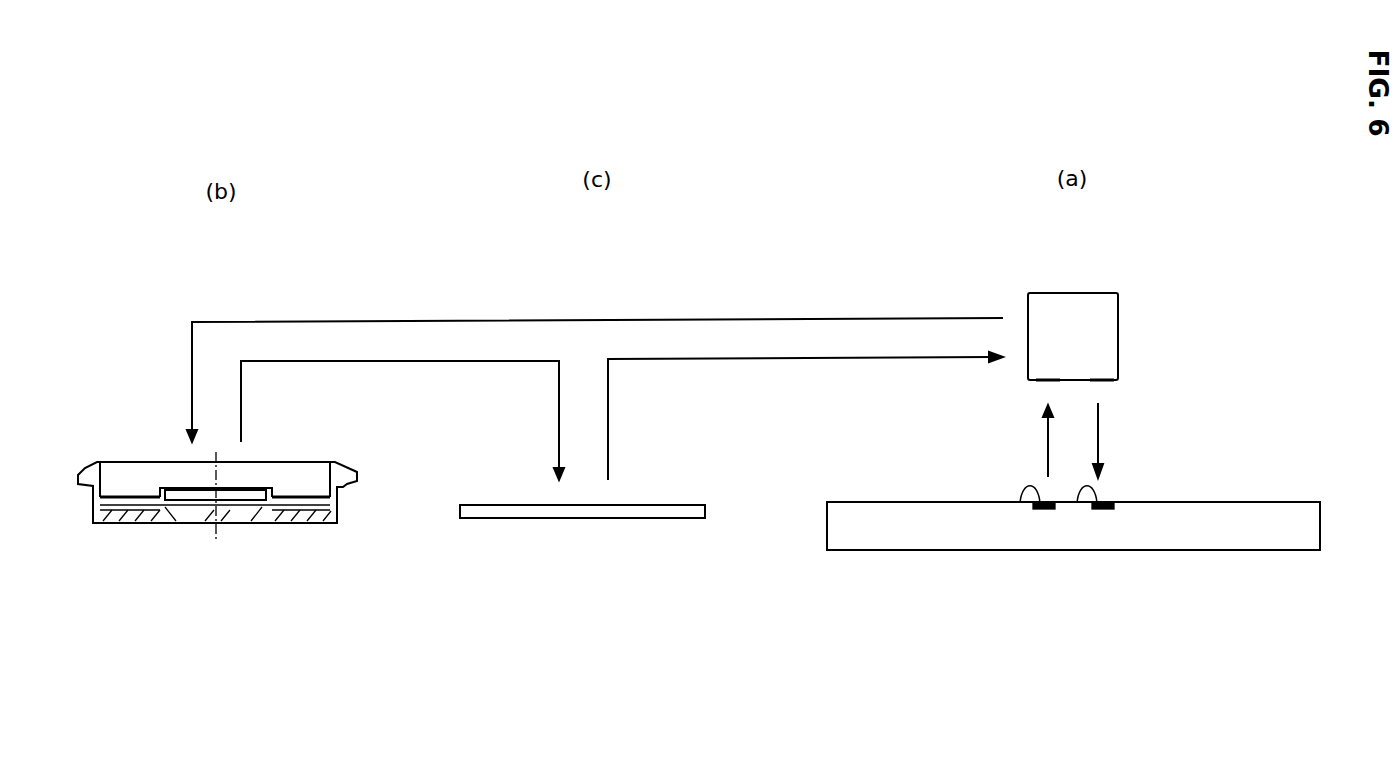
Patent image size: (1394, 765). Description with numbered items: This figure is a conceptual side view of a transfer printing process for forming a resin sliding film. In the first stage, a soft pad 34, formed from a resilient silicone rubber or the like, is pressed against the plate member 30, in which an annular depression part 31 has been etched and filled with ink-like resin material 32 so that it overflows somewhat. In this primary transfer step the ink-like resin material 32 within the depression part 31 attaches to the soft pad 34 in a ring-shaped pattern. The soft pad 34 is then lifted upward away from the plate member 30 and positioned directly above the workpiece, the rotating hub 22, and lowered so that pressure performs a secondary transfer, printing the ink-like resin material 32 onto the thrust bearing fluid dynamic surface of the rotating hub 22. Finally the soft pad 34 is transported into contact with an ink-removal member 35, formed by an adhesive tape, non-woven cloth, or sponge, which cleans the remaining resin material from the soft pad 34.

The rotating hub 22 is at (247, 523).
The plate member 30 is at (1175, 552).
The depression part 31 is at (1076, 503).
The ink-like resin material 32 is at (1040, 382).
The soft pad 34 is at (1118, 335).
The ink-removal member 35 is at (583, 518).